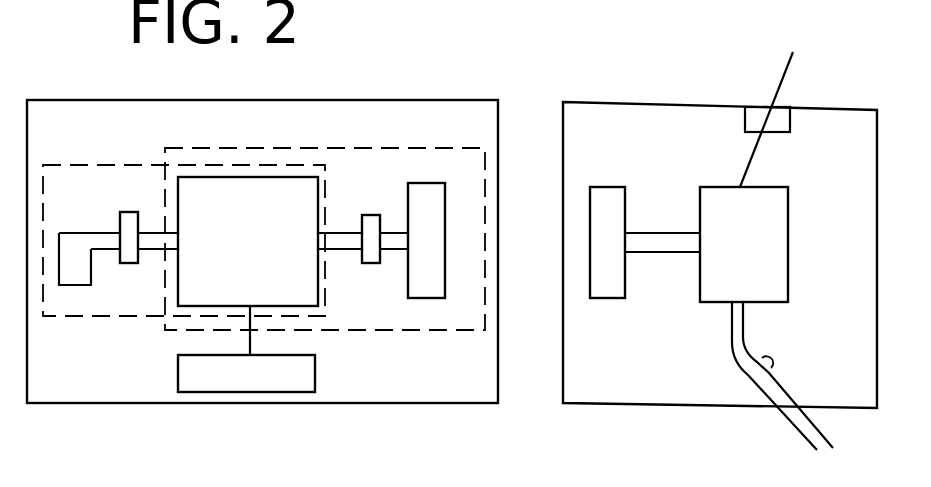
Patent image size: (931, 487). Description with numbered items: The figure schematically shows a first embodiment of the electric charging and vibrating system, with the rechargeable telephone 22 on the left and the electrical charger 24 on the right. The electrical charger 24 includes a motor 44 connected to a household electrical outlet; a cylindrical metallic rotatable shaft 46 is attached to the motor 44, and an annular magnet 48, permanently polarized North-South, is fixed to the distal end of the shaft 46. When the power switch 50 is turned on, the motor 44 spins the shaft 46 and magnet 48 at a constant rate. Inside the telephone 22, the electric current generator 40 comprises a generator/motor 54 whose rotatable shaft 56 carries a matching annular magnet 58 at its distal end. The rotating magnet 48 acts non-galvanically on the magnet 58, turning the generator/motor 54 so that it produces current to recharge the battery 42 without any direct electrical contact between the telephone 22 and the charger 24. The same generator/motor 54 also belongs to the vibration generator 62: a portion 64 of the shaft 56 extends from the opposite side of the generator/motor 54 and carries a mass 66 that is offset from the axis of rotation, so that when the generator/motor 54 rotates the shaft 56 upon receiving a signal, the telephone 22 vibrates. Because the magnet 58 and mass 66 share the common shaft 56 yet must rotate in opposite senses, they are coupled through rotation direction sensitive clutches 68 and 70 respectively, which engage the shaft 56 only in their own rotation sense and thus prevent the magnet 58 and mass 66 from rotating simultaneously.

The telephone 22 is at (361, 116).
The electrical charger 24 is at (856, 114).
The electric current generator 40 is at (340, 322).
The battery 42 is at (252, 383).
The motor 44 is at (770, 205).
The rotatable shaft 46 is at (650, 231).
The annular magnet 48 is at (617, 277).
The power switch 50 is at (787, 72).
The generator/motor 54 is at (250, 180).
The rotatable shaft 56 is at (153, 232).
The annular magnet 58 is at (432, 218).
The vibration generator 62 is at (70, 176).
The portion of the rotatable shaft 64 is at (148, 243).
The mass 66 is at (73, 278).
The rotation direction sensitive clutch 68 is at (375, 211).
The rotation direction sensitive clutch 70 is at (118, 211).